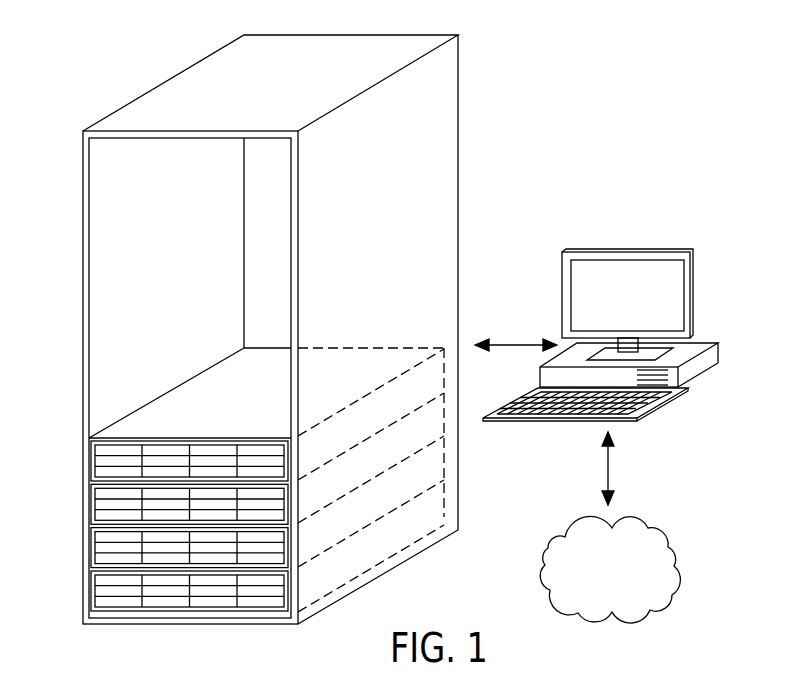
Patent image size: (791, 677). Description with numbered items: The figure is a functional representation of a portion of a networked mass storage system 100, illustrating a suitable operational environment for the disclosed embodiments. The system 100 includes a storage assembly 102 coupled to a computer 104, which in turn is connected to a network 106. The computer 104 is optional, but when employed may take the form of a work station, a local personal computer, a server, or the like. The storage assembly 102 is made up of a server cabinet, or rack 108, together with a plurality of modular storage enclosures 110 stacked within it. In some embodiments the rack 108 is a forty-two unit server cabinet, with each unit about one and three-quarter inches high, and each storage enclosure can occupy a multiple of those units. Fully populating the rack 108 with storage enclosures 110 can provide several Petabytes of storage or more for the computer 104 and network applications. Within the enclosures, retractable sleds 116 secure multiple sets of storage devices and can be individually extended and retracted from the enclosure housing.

The networked mass storage system 100 is at (577, 119).
The storage assembly 102 is at (200, 91).
The computer 104 is at (650, 252).
The network 106 is at (667, 528).
The server cabinet (rack) 108 is at (82, 330).
The modular storage enclosures 110 is at (208, 415).
The retractable sleds 116 is at (123, 608).